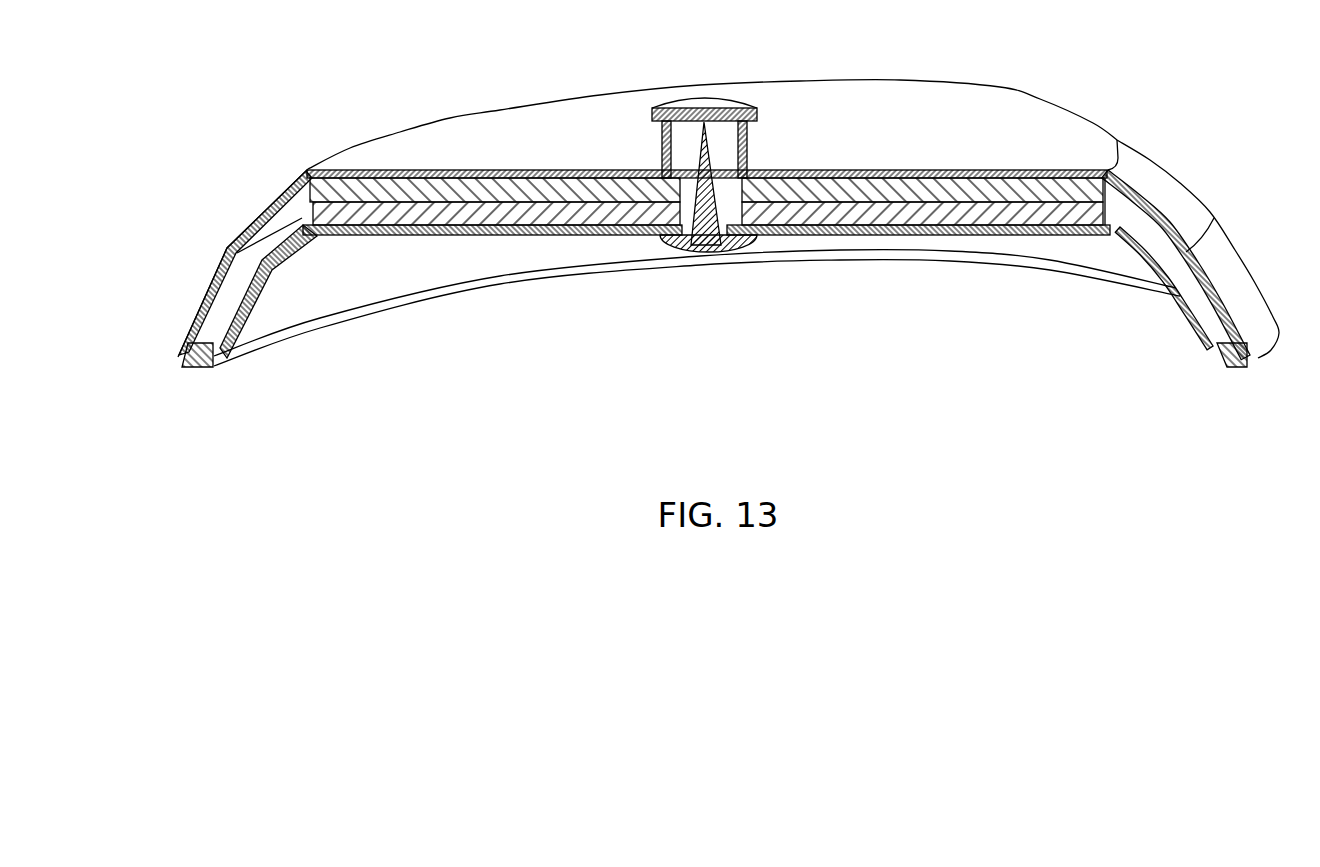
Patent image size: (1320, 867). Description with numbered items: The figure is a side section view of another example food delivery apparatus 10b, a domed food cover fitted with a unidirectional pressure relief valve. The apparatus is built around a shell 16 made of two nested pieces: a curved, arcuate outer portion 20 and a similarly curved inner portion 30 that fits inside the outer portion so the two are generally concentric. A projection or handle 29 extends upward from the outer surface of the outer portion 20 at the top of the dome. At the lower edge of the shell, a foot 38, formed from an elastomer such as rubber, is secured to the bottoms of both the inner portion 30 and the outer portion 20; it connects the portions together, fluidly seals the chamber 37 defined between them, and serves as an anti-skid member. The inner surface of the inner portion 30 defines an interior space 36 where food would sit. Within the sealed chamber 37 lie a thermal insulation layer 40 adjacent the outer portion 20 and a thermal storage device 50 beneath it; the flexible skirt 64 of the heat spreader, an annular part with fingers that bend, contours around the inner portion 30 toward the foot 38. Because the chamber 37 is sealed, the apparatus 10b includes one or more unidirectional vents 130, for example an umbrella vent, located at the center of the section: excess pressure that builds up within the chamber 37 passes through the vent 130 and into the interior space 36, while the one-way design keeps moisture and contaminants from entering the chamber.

The food delivery apparatus 10b is at (184, 119).
The shell 16 is at (179, 279).
The outer portion 20 is at (1053, 94).
The handle 29 is at (705, 103).
The thermal insulation layer 40 is at (828, 190).
The thermal storage device 50 is at (942, 203).
The flexible skirt 64 is at (1157, 234).
The unidirectional vent 130 is at (717, 252).
The interior space 36 is at (1078, 296).
The chamber 37 is at (1193, 307).
The inner portion 30 is at (1188, 343).
The foot 38 is at (1235, 367).